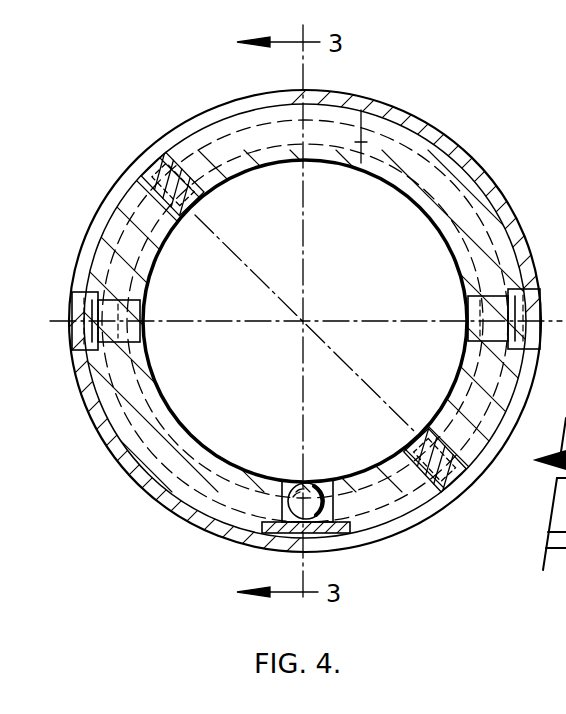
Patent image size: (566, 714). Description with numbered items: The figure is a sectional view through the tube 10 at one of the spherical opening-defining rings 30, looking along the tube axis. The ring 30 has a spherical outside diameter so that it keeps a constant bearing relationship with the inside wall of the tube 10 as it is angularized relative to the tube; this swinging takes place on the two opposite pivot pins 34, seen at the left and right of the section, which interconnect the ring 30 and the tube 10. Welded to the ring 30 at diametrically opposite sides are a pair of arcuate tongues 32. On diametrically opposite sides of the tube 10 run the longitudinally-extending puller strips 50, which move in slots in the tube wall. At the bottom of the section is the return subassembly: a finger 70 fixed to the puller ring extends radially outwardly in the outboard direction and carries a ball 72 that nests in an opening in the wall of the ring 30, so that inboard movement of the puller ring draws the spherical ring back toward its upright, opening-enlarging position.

The tube 10 is at (424, 118).
The spherical opening-defining ring 30 is at (455, 170).
The arcuate tongue 32 is at (340, 118).
The pivot pin 34 is at (485, 310).
The puller strip 50 is at (152, 145).
The finger 70 is at (363, 538).
The ball 72 is at (316, 482).